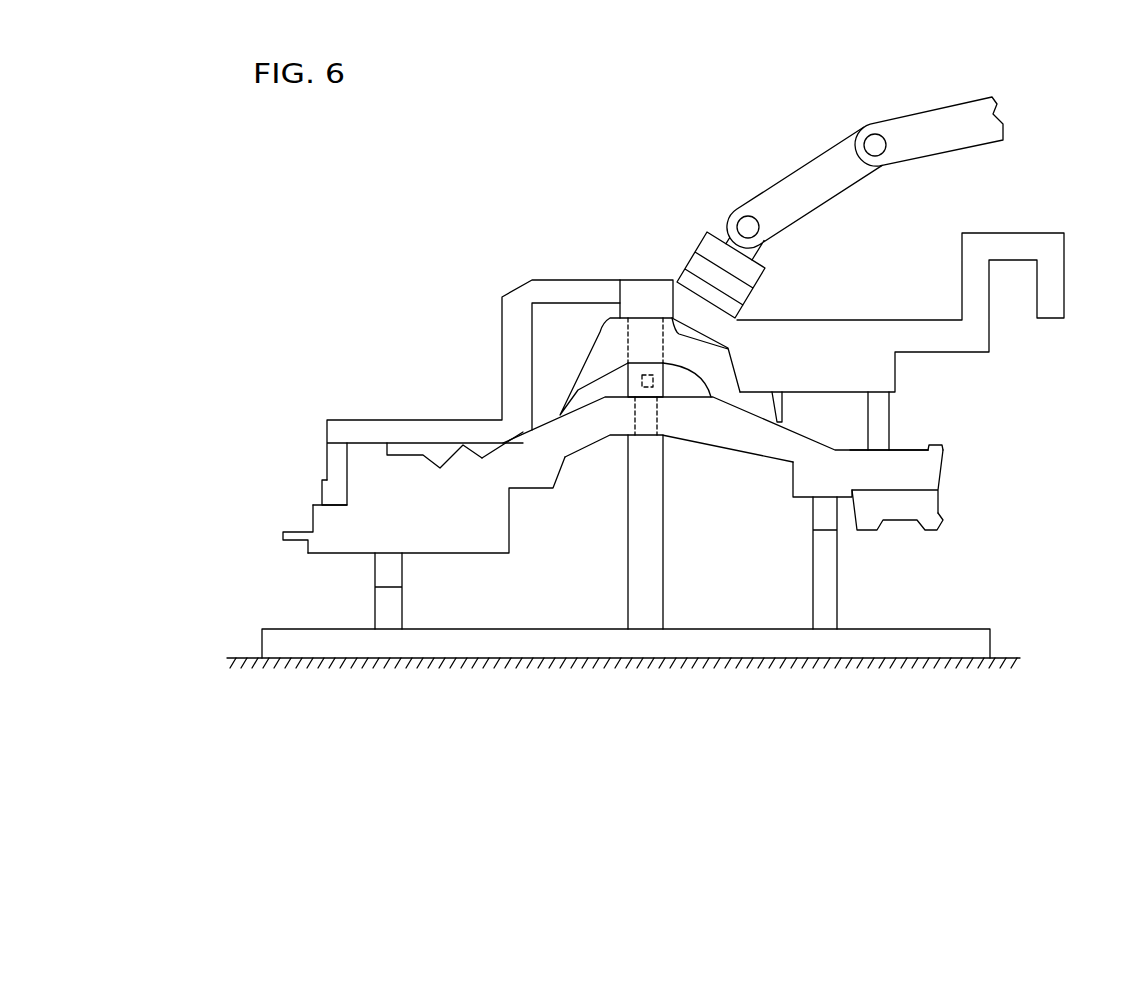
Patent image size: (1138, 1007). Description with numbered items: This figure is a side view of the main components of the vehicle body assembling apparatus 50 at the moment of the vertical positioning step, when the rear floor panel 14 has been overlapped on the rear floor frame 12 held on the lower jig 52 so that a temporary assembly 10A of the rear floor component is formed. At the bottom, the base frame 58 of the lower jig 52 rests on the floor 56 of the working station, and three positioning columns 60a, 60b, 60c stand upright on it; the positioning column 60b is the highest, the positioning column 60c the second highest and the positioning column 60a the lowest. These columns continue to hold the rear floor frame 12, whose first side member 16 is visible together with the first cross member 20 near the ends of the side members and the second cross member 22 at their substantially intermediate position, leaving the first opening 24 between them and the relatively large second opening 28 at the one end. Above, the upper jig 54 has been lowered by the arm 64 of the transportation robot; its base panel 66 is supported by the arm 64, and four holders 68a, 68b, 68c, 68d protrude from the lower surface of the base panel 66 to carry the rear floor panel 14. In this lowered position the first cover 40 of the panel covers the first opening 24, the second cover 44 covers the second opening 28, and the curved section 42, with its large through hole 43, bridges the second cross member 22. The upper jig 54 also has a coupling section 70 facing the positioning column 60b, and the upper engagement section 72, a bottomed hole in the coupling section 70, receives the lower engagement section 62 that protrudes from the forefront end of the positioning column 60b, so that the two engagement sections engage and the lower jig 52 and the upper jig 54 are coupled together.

The temporary assembly 10A is at (967, 414).
The rear floor frame 12 is at (917, 446).
The rear floor panel 14 is at (946, 443).
The first side member 16 is at (357, 545).
The first cross member 20 is at (345, 522).
The second cross member 22 is at (547, 450).
The first opening 24 is at (452, 497).
The second opening 28 is at (902, 475).
The first cover 40 is at (408, 465).
The curved section 42 is at (717, 373).
The large through hole 43 is at (631, 335).
The second cover 44 is at (925, 502).
The vehicle body assembling apparatus 50 is at (332, 244).
The lower jig 52 is at (656, 620).
The upper jig 54 is at (1075, 297).
The floor 56 is at (243, 656).
The base frame 58 is at (291, 638).
The positioning column 60a is at (392, 610).
The positioning column 60b is at (655, 580).
The positioning column 60c is at (828, 578).
The lower engagement section 62 is at (667, 392).
The arm 64 is at (841, 180).
The base panel 66 is at (565, 288).
The holder 68a is at (336, 466).
The holder 68b is at (523, 435).
The holder 68c is at (782, 403).
The holder 68d is at (878, 402).
The coupling section 70 is at (628, 382).
The upper engagement section 72 is at (693, 429).